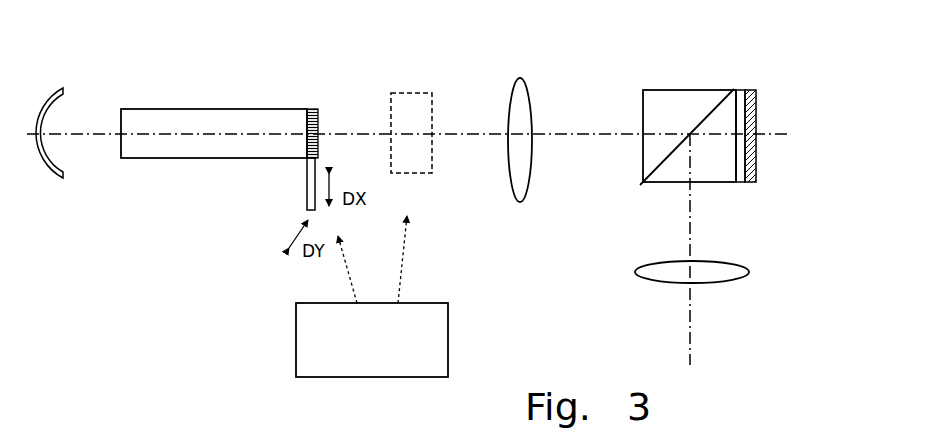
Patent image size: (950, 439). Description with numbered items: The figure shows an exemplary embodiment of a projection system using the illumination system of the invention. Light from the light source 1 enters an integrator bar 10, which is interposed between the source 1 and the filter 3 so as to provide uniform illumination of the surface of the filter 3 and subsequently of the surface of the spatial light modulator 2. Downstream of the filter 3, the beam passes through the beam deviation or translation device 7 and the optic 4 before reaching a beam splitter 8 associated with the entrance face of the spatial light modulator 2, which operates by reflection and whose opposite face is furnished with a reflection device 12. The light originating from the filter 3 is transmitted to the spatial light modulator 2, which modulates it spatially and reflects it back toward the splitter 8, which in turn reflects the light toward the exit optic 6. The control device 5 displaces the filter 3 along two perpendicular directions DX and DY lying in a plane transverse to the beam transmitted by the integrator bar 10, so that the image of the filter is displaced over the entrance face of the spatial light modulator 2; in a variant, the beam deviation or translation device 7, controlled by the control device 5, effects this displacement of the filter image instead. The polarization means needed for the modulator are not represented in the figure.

The light source 1 is at (63, 88).
The integrator bar 10 is at (213, 109).
The filter 3 is at (313, 108).
The beam deviation or translation device 7 is at (412, 93).
The optic 4 is at (518, 78).
The beam splitter 8 is at (660, 98).
The spatial light modulator 2 is at (740, 90).
The reflection device 12 is at (750, 90).
The control device 5 is at (295, 340).
The exit optic 6 is at (637, 272).